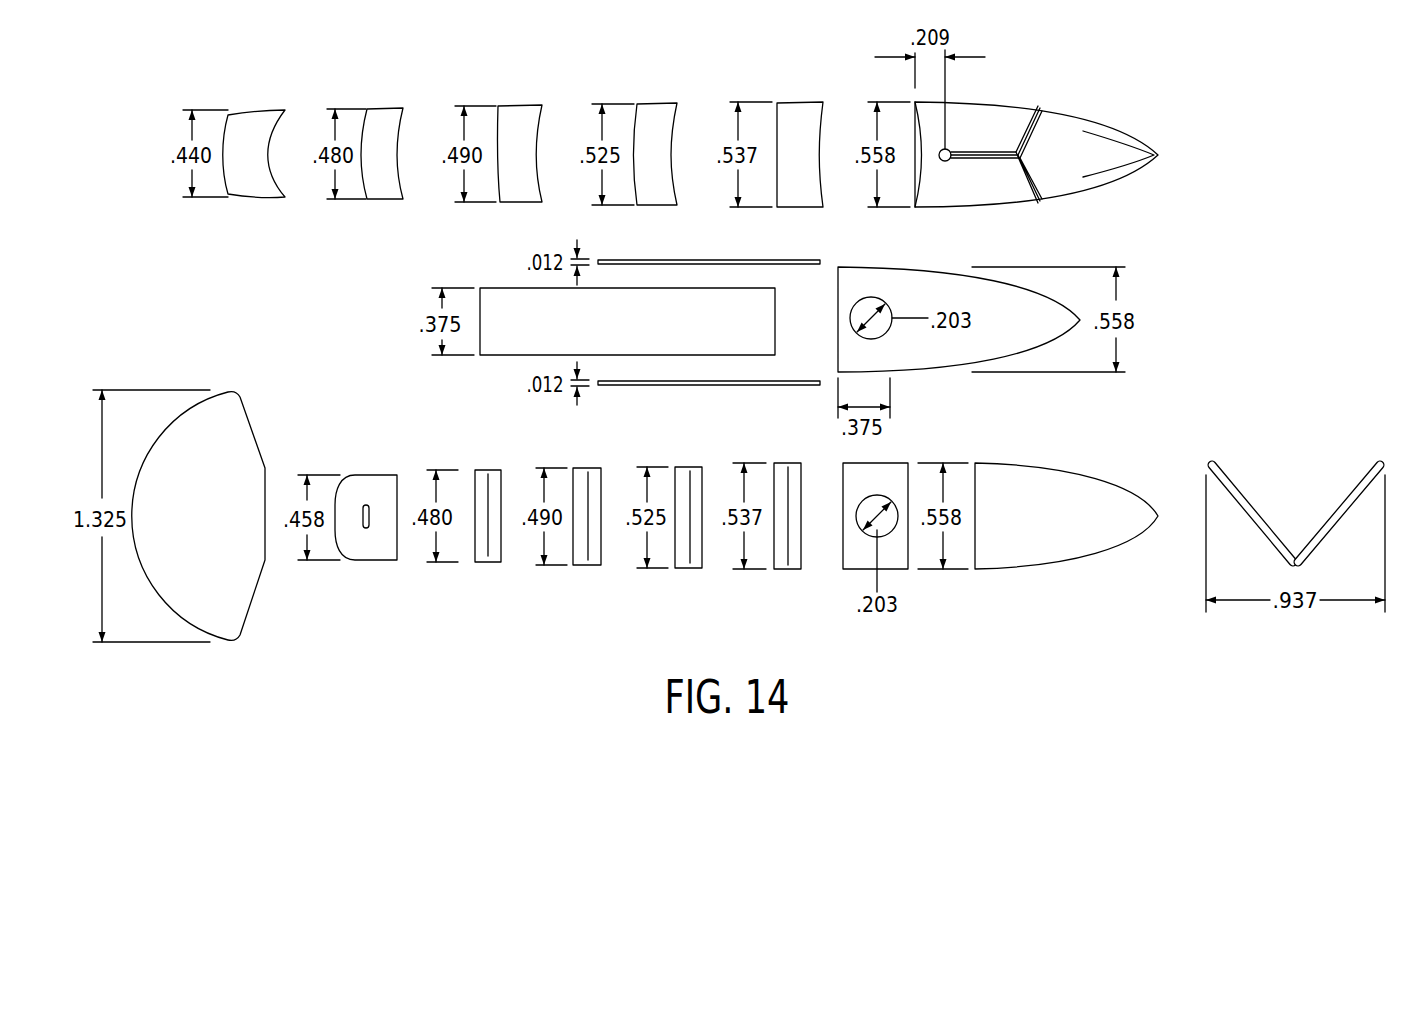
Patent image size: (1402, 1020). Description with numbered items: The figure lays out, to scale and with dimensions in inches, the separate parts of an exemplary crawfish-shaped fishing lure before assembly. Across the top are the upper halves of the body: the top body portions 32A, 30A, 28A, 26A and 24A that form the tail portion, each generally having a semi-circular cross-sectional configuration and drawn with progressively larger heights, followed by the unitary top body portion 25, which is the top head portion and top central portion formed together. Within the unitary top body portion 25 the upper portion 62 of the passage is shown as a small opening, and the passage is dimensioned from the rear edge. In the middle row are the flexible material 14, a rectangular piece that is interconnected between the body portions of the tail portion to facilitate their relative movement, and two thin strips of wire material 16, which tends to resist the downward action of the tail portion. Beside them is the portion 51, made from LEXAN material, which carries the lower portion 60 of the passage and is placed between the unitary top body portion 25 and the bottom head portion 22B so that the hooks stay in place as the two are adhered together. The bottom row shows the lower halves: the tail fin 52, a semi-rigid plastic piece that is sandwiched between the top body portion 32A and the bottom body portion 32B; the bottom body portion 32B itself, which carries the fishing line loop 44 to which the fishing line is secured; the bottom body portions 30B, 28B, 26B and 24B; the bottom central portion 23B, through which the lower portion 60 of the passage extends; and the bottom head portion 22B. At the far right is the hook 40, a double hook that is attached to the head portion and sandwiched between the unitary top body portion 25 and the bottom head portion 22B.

The top body portion 32A is at (258, 118).
The top body portion 30A is at (385, 117).
The top body portion 28A is at (523, 113).
The top body portion 26A is at (656, 110).
The top body portion 24A is at (802, 112).
The unitary top body portion 25 is at (1008, 110).
The upper portion 62 is at (946, 162).
The flexible material 14 is at (515, 300).
The wire material 16 is at (710, 260).
The lower portion 60 is at (872, 297).
The portion 51 is at (1028, 302).
The tail fin 52 is at (232, 592).
The fishing line loop 44 is at (370, 510).
The bottom body portion 32B is at (375, 547).
The bottom body portion 30B is at (494, 553).
The bottom body portion 28B is at (580, 553).
The bottom body portion 26B is at (697, 558).
The bottom body portion 24B is at (780, 558).
The bottom central portion 23B is at (853, 560).
The bottom head portion 22B is at (1018, 555).
The hook 40 is at (1245, 498).